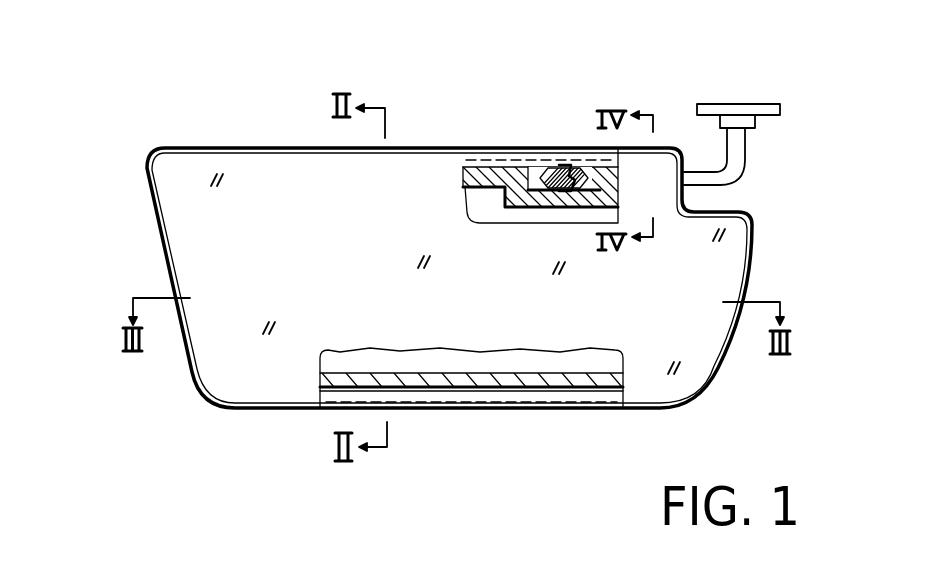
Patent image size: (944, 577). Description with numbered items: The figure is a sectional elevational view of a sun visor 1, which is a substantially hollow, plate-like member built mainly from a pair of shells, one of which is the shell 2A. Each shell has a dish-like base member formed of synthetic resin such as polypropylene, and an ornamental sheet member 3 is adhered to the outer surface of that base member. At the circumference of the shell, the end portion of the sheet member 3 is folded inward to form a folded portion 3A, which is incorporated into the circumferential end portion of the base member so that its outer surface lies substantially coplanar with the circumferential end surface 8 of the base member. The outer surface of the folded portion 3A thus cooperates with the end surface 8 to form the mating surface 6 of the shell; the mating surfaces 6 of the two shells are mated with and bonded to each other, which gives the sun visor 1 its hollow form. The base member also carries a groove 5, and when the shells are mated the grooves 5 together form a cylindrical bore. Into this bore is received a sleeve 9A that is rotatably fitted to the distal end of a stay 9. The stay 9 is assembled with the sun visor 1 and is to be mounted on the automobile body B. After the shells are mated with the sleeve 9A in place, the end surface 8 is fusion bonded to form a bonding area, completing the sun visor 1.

The sun visor 1 is at (446, 275).
The shell 2A is at (268, 380).
The ornamental sheet member 3 is at (449, 326).
The folded portion 3A is at (480, 163).
The groove 5 is at (515, 152).
The mating surface 6 is at (484, 268).
The circumferential end surface 8 is at (472, 182).
The stay 9 is at (742, 170).
The sleeve 9A is at (592, 148).
The automobile body B is at (750, 104).